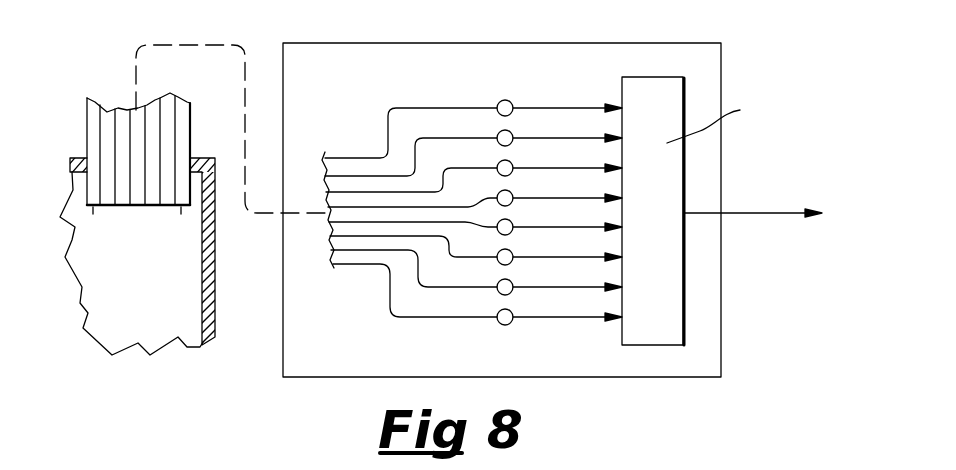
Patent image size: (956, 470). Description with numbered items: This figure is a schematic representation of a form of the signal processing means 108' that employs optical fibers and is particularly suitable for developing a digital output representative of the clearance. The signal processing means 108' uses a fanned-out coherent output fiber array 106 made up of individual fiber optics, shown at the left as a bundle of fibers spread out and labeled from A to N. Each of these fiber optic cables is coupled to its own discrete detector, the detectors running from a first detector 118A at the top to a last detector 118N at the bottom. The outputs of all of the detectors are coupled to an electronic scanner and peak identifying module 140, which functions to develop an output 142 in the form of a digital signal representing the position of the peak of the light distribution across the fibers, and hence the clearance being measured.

The fanned-out coherent output fiber array 106 is at (89, 105).
The signal processing means 108' is at (491, 209).
The detector 118A is at (505, 100).
The detector 118N is at (505, 325).
The electronic scanner and peak identifying module 140 is at (672, 229).
The output 142 is at (752, 212).